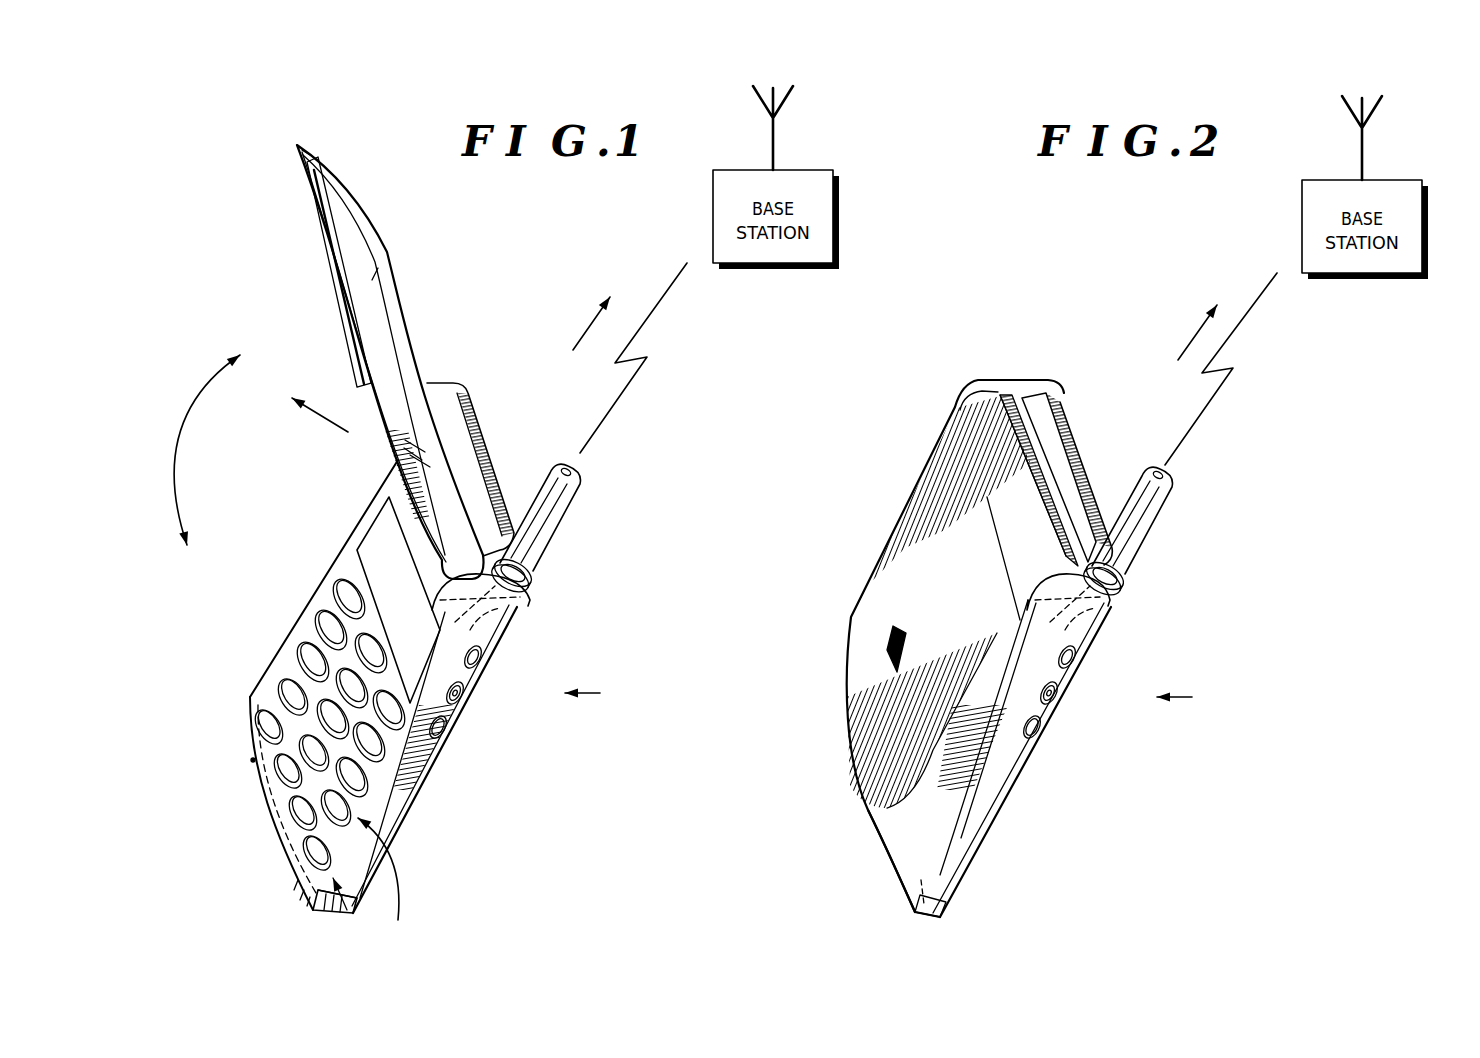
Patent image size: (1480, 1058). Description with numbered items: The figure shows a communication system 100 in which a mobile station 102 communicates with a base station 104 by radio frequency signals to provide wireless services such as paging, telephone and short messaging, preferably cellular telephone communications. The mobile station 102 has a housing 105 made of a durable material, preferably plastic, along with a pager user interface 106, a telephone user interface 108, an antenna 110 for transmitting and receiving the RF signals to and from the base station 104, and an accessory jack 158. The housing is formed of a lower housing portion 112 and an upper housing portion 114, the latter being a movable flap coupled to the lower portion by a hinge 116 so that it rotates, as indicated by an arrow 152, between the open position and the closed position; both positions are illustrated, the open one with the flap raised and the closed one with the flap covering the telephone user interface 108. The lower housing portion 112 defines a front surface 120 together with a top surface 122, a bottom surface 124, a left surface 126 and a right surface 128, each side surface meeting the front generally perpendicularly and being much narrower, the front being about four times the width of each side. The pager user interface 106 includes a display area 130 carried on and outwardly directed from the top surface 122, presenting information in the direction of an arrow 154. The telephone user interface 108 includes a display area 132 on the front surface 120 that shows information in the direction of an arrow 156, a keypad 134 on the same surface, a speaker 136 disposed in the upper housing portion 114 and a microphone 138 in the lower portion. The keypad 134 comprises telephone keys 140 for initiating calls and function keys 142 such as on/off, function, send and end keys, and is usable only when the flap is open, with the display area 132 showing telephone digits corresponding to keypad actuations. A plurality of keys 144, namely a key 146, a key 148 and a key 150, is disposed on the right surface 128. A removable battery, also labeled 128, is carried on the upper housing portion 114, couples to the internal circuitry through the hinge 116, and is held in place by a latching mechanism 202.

In FIG. 1, the communication system 100 is at (676, 426).
In FIG. 2, the communication system 100 is at (1298, 436).
In FIG. 1, the mobile station 102 is at (510, 604).
In FIG. 2, the mobile station 102 is at (1115, 607).
In FIG. 1, the base station 104 is at (822, 170).
In FIG. 2, the base station 104 is at (1415, 180).
In FIG. 1, the housing 105 is at (427, 807).
In FIG. 2, the housing 105 is at (972, 877).
In FIG. 1, the user interface 106 is at (499, 383).
In FIG. 2, the user interface 106 is at (1113, 428).
In FIG. 1, the user interface 108 is at (265, 493).
In FIG. 1, the antenna 110 is at (557, 503).
In FIG. 2, the antenna 110 is at (1148, 503).
In FIG. 1, the housing portion 112 is at (403, 843).
In FIG. 1, the housing portion 114 is at (371, 362).
In FIG. 2, the housing portion 114 is at (858, 670).
In FIG. 1, the hinge 116 is at (457, 608).
In FIG. 2, the hinge 116 is at (988, 394).
In FIG. 1, the surface 120 is at (317, 724).
In FIG. 1, the surface 122 is at (483, 446).
In FIG. 2, the surface 122 is at (1017, 452).
In FIG. 1, the surface 124 is at (270, 823).
In FIG. 2, the surface 124 is at (868, 828).
In FIG. 1, the surface 126 is at (333, 553).
In FIG. 1, the surface 128 is at (433, 465).
In FIG. 2, the surface 128 is at (920, 503).
In FIG. 1, the display area 130 is at (455, 413).
In FIG. 2, the display area 130 is at (1045, 403).
In FIG. 1, the display area 132 is at (372, 540).
In FIG. 1, the keypad 134 is at (310, 623).
In FIG. 1, the speaker 136 is at (337, 283).
In FIG. 1, the microphone 138 is at (253, 760).
In FIG. 1, the telephone keys 140 is at (387, 880).
In FIG. 1, the function keys 142 is at (348, 914).
In FIG. 1, the keys 144 is at (603, 693).
In FIG. 2, the keys 144 is at (1195, 697).
In FIG. 1, the key 146 is at (485, 655).
In FIG. 2, the key 146 is at (1079, 655).
In FIG. 1, the key 148 is at (467, 692).
In FIG. 2, the key 148 is at (1061, 692).
In FIG. 1, the key 150 is at (450, 727).
In FIG. 2, the key 150 is at (1044, 727).
In FIG. 1, the arrow 152 is at (178, 445).
In FIG. 1, the arrow 154 is at (597, 318).
In FIG. 2, the arrow 154 is at (1203, 325).
In FIG. 1, the arrow 156 is at (318, 413).
In FIG. 1, the accessory jack 158 is at (478, 532).
In FIG. 2, the accessory jack 158 is at (1083, 540).
In FIG. 2, the latching mechanism 202 is at (903, 636).